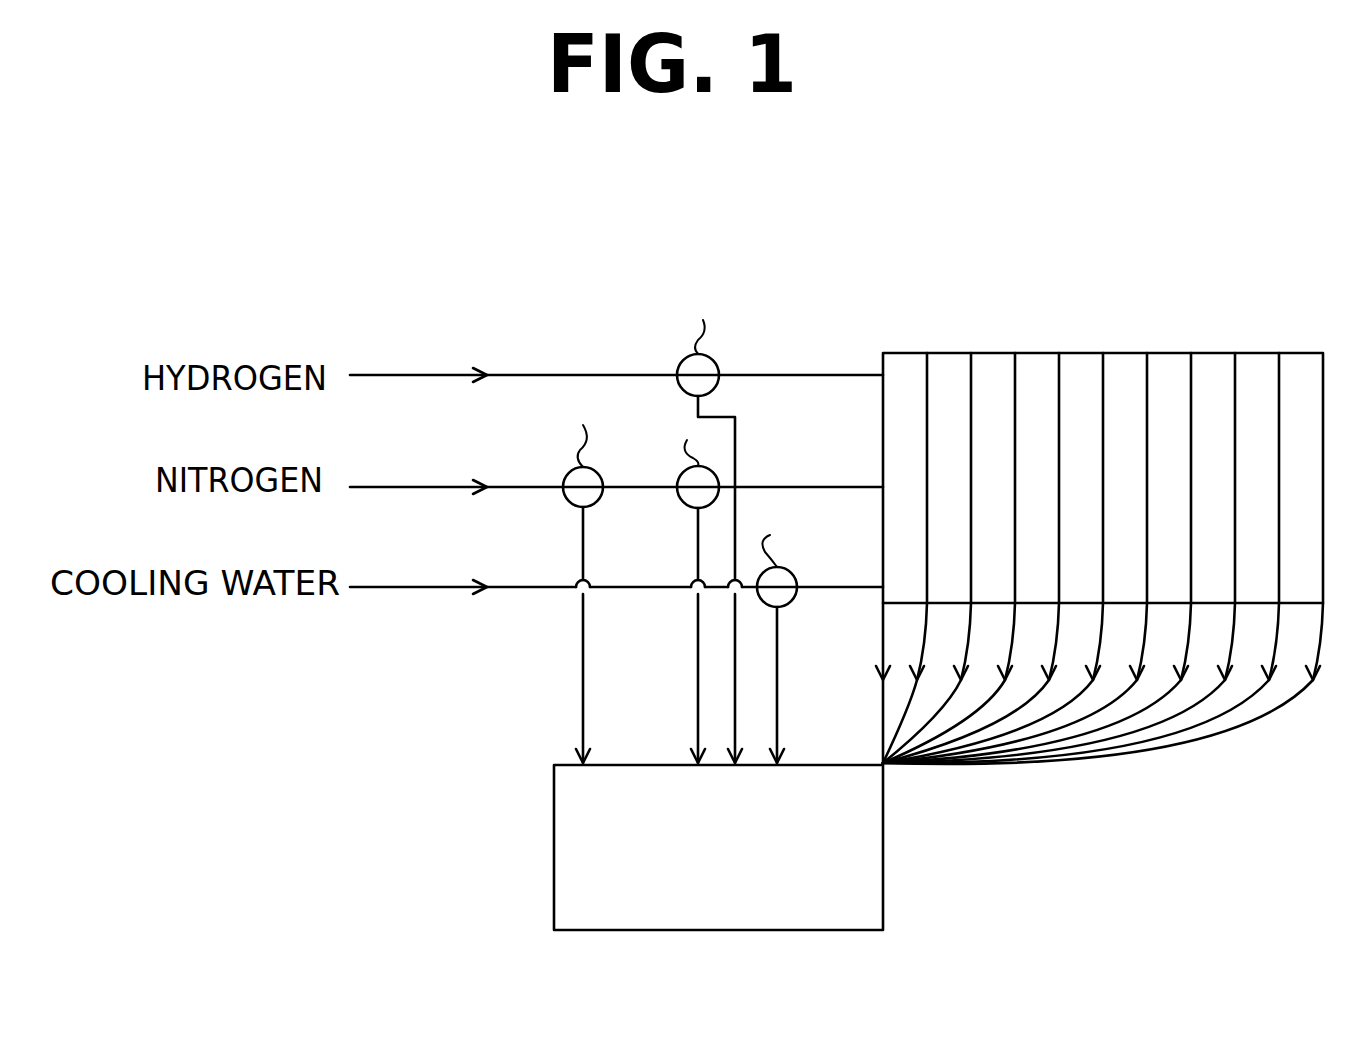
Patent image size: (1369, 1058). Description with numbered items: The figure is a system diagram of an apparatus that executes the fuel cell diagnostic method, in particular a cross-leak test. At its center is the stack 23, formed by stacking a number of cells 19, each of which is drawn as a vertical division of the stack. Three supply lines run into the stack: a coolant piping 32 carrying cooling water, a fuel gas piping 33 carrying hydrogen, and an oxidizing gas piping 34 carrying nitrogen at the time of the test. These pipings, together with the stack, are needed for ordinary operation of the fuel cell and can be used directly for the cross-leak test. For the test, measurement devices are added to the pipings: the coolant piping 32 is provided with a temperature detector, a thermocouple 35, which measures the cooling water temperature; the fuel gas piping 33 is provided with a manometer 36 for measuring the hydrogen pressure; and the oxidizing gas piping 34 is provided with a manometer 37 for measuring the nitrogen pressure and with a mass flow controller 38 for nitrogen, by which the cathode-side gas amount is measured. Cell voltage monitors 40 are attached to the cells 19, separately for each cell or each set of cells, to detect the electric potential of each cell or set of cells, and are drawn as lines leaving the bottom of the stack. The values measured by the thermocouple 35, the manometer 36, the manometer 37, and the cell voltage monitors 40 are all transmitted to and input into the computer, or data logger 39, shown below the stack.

The cell 19 is at (1172, 363).
The stack 23 is at (1203, 353).
The coolant piping 32 is at (533, 590).
The fuel gas piping 33 is at (540, 375).
The oxidizing gas piping 34 is at (503, 487).
The thermocouple 35 is at (790, 603).
The manometer 36 is at (713, 362).
The manometer 37 is at (685, 504).
The mass flow controller 38 is at (572, 505).
The computer (data logger) 39 is at (570, 865).
The cell voltage monitors 40 is at (1279, 605).